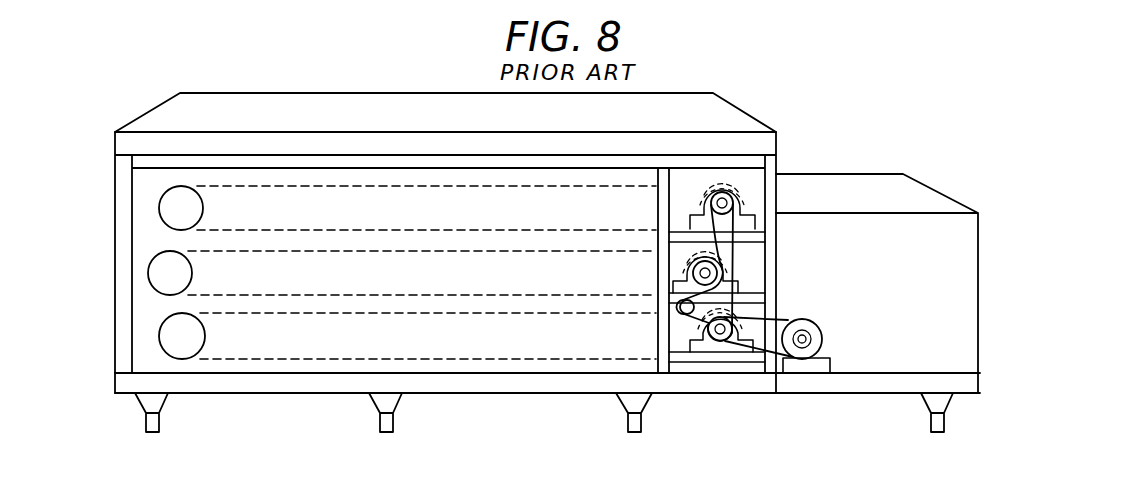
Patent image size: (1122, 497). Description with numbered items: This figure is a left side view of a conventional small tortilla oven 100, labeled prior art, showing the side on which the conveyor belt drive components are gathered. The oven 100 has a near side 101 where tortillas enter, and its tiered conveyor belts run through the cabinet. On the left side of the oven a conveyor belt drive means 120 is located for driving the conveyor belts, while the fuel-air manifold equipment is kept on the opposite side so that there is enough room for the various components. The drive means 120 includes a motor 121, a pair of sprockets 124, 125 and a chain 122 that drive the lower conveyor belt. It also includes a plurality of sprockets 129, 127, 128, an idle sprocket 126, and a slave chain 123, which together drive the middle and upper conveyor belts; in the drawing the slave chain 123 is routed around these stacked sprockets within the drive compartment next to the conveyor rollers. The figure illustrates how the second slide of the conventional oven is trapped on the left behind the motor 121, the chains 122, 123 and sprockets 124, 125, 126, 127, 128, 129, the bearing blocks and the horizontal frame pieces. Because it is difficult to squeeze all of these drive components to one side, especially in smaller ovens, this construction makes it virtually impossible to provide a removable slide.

The conventional small tortilla oven 100 is at (768, 95).
The near side 101 is at (797, 167).
The conveyor belt drive means 120 is at (946, 302).
The motor 121 is at (823, 336).
The chain 122 is at (770, 352).
The slave chain 123 is at (742, 258).
The sprocket 124 is at (823, 346).
The sprocket 125 is at (725, 372).
The idle sprocket 126 is at (681, 312).
The sprocket 127 is at (690, 268).
The sprocket 128 is at (711, 198).
The sprocket 129 is at (713, 343).